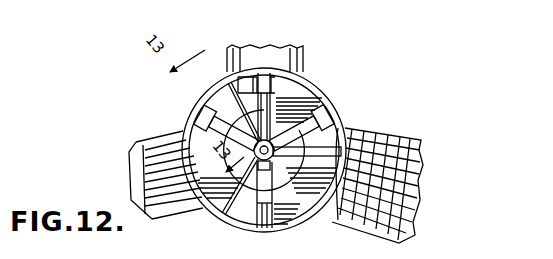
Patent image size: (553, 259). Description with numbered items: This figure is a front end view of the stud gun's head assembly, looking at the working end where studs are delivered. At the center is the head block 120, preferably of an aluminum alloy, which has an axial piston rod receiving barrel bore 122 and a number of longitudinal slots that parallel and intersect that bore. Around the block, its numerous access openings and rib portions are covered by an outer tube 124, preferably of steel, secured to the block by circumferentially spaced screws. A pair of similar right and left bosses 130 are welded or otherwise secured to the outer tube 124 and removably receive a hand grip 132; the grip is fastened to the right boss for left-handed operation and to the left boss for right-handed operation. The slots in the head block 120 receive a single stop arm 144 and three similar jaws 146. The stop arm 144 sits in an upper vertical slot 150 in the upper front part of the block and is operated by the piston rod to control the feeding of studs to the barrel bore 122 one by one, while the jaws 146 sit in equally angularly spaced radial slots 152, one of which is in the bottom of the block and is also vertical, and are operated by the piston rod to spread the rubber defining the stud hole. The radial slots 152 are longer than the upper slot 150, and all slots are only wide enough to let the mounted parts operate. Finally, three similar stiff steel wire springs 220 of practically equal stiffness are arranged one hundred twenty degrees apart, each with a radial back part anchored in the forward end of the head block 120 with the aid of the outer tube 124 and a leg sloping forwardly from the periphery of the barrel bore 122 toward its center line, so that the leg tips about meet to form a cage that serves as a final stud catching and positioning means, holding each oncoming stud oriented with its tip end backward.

The head block 120 is at (318, 88).
The barrel bore 122 is at (282, 170).
The outer tube 124 is at (186, 128).
The bosses 130 is at (131, 178).
The hand grip 132 is at (452, 148).
The stop arm 144 is at (297, 99).
The jaws 146 is at (228, 95).
The upper vertical slot 150 is at (268, 108).
The radial slots 152 is at (199, 116).
The wire springs 220 is at (222, 76).